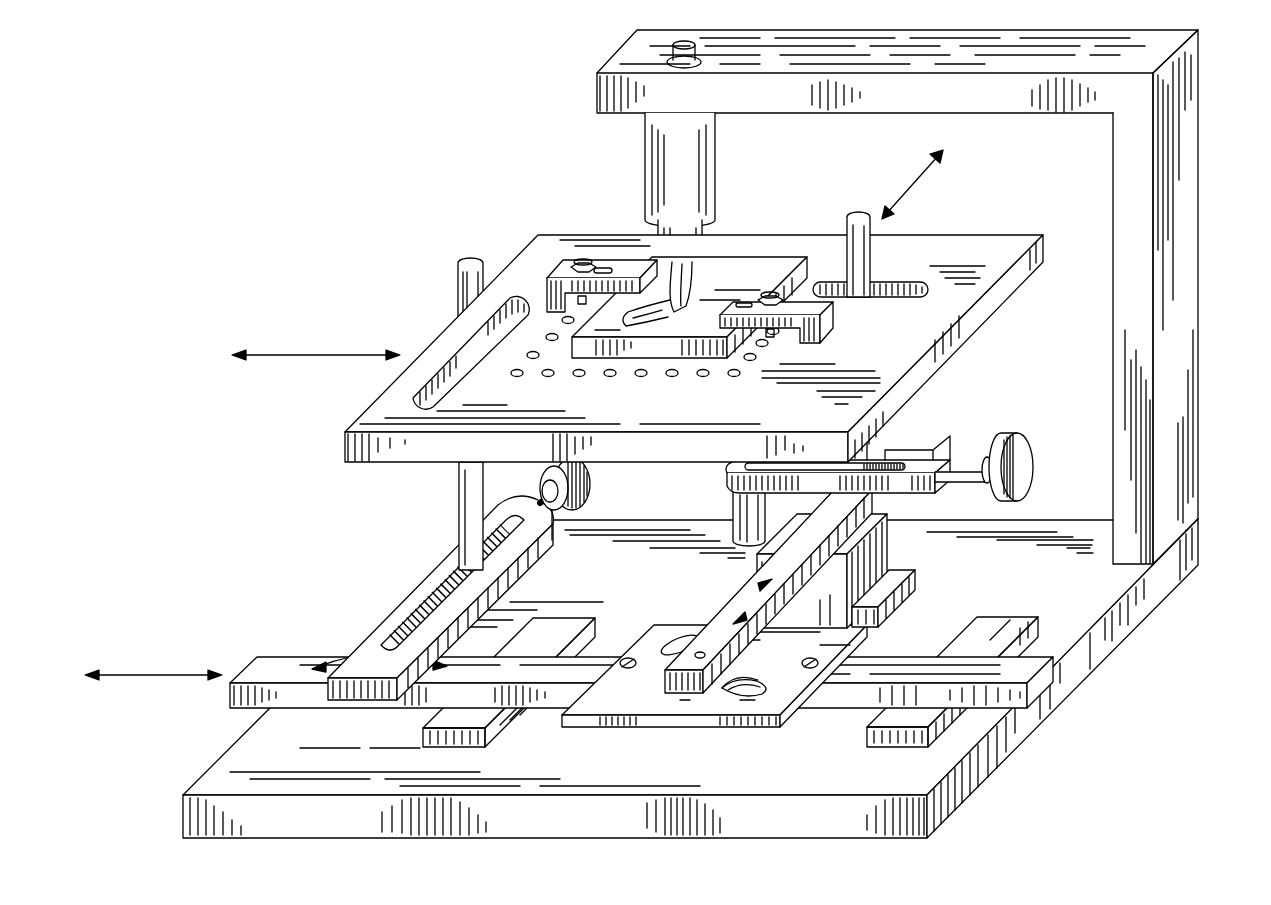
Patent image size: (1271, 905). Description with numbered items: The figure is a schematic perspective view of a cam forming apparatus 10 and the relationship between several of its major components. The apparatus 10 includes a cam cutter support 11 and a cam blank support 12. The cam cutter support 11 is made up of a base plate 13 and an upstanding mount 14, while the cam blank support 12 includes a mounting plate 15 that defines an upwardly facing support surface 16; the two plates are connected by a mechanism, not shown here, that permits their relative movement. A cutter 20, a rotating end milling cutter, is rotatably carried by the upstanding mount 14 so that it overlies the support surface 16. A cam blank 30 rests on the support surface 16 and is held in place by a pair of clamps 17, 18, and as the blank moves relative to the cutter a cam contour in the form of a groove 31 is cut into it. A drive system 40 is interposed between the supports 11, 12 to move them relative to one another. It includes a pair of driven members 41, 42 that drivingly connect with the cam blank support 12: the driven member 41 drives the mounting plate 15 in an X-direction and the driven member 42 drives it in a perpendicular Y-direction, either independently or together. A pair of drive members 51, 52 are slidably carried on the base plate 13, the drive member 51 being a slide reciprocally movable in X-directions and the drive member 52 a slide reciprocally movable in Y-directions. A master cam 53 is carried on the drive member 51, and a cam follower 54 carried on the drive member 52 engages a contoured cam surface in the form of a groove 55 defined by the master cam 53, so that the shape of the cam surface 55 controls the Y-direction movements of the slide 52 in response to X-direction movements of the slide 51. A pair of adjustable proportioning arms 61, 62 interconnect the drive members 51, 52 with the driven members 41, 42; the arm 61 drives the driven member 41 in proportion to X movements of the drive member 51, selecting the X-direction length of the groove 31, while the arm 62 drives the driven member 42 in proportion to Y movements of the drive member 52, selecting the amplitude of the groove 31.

The cam forming apparatus 10 is at (420, 190).
The cam cutter support 11 is at (798, 104).
The cam blank support 12 is at (694, 328).
The base plate 13 is at (860, 830).
The upstanding mount 14 is at (1180, 305).
The mounting plate 15 is at (935, 363).
The support surface 16 is at (920, 327).
The clamp 17 is at (820, 328).
The clamp 18 is at (556, 292).
The cutter 20 is at (688, 288).
The cam blank 30 is at (680, 346).
The groove 31 is at (657, 316).
The drive system 40 is at (641, 637).
The driven member 41 is at (462, 492).
The driven member 42 is at (873, 270).
The drive member 51 is at (293, 702).
The drive member 52 is at (740, 603).
The master cam 53 is at (735, 724).
The cam follower 54 is at (732, 684).
The cam surface 55 is at (768, 690).
The proportioning arm 61 is at (432, 583).
The proportioning arm 62 is at (945, 445).